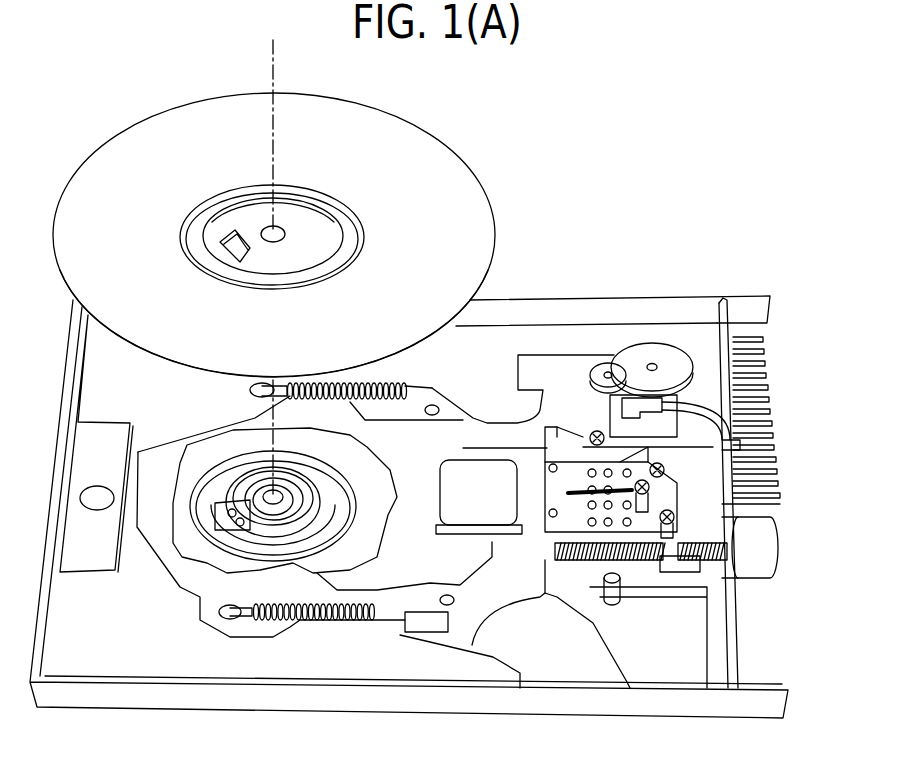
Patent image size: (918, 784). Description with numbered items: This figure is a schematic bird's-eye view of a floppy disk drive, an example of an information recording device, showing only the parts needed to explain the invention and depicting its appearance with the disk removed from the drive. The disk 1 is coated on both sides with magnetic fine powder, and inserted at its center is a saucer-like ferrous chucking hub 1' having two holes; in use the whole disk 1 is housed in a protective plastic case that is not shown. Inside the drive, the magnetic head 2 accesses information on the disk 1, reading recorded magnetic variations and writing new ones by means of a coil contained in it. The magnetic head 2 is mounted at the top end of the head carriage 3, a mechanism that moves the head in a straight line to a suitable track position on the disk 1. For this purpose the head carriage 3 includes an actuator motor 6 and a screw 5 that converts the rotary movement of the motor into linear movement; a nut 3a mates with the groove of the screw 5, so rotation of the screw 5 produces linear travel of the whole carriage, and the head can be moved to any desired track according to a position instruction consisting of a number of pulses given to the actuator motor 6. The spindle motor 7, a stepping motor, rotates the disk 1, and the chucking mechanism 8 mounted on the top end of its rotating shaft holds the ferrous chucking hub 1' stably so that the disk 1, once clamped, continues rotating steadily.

The disk 1 is at (275, 226).
The chucking hub 1' is at (304, 242).
The magnetic head 2 is at (485, 478).
The head carriage 3 is at (565, 472).
The nut 3a is at (673, 558).
The screw 5 is at (620, 585).
The actuator motor 6 is at (767, 538).
The spindle motor 7 is at (203, 455).
The chucking mechanism 8 is at (216, 528).